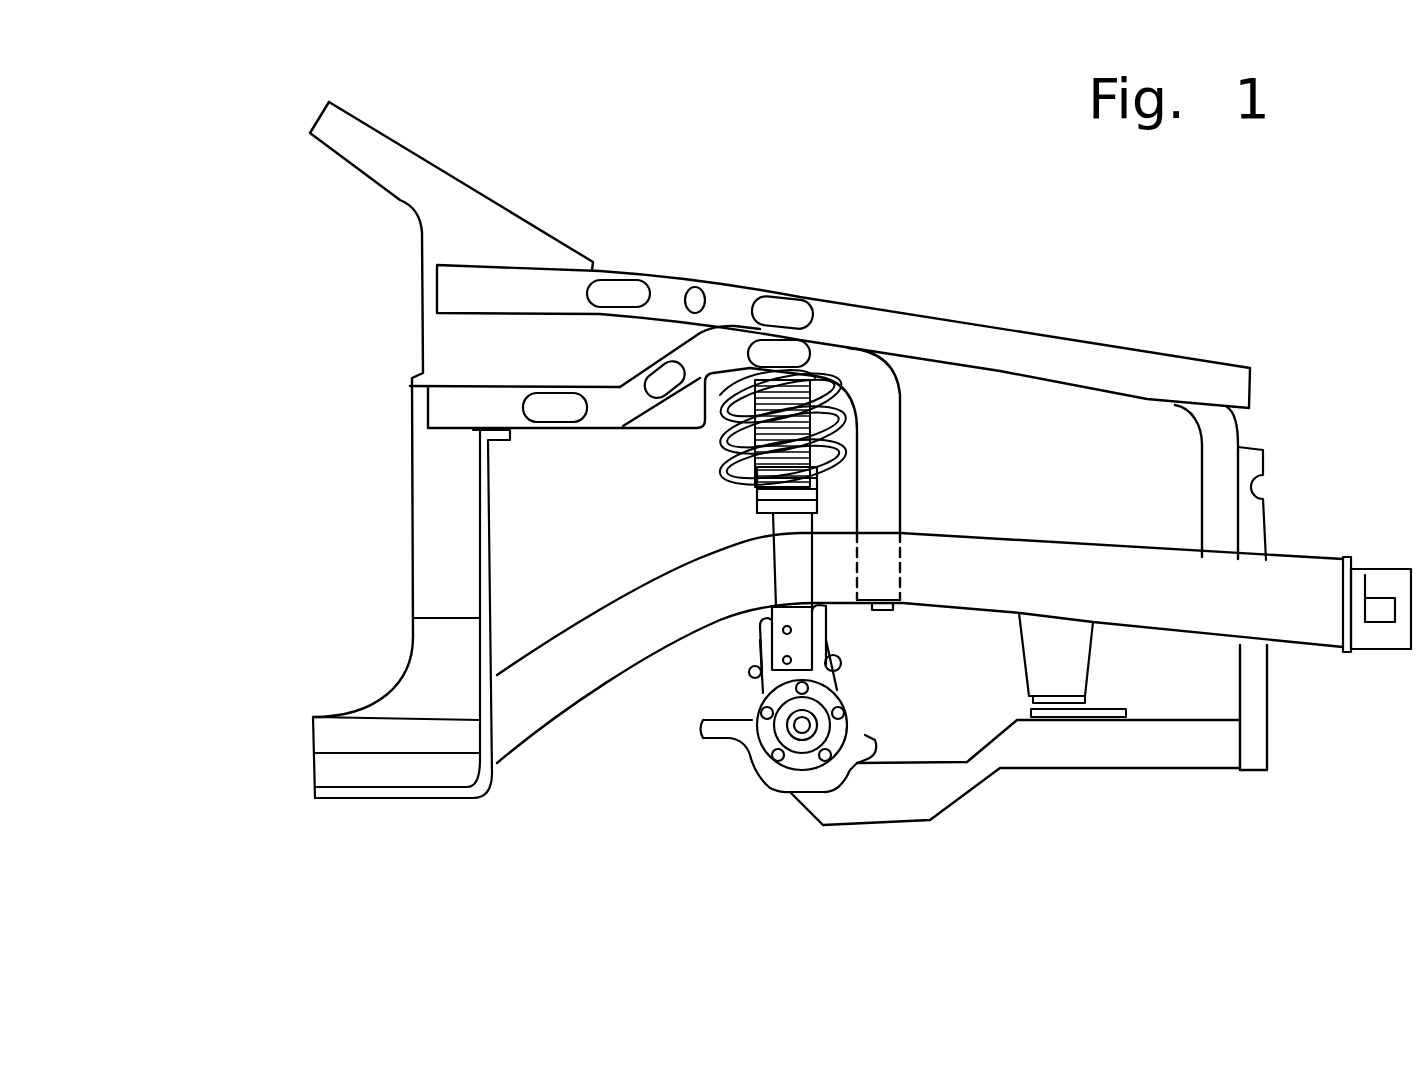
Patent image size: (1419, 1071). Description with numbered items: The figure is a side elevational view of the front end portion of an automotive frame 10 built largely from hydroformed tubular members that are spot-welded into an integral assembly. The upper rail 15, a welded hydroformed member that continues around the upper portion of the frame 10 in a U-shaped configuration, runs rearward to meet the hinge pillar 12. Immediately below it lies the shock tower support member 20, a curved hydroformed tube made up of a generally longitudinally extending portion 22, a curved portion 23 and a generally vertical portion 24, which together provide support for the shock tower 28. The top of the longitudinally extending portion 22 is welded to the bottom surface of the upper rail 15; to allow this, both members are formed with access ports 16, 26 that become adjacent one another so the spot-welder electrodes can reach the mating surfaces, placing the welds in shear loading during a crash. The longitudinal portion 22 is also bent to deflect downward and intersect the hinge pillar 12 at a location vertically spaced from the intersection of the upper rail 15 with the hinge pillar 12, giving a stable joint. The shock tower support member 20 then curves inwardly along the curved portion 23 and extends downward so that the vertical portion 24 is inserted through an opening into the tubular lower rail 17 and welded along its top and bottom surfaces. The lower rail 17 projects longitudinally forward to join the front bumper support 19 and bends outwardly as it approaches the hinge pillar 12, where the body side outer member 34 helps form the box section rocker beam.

The automotive frame 10 is at (335, 583).
The hinge pillar 12 is at (420, 188).
The upper rail 15 is at (1047, 350).
The access ports 16 is at (667, 277).
The lower rail 17 is at (1179, 615).
The front bumper support 19 is at (1395, 569).
The shock tower support member 20 is at (885, 467).
The longitudinally extending portion 22 is at (614, 407).
The curved portion 23 is at (900, 383).
The vertical portion 24 is at (890, 517).
The access ports 26 is at (817, 353).
The shock tower 28 is at (703, 500).
The body side outer member 34 is at (338, 765).